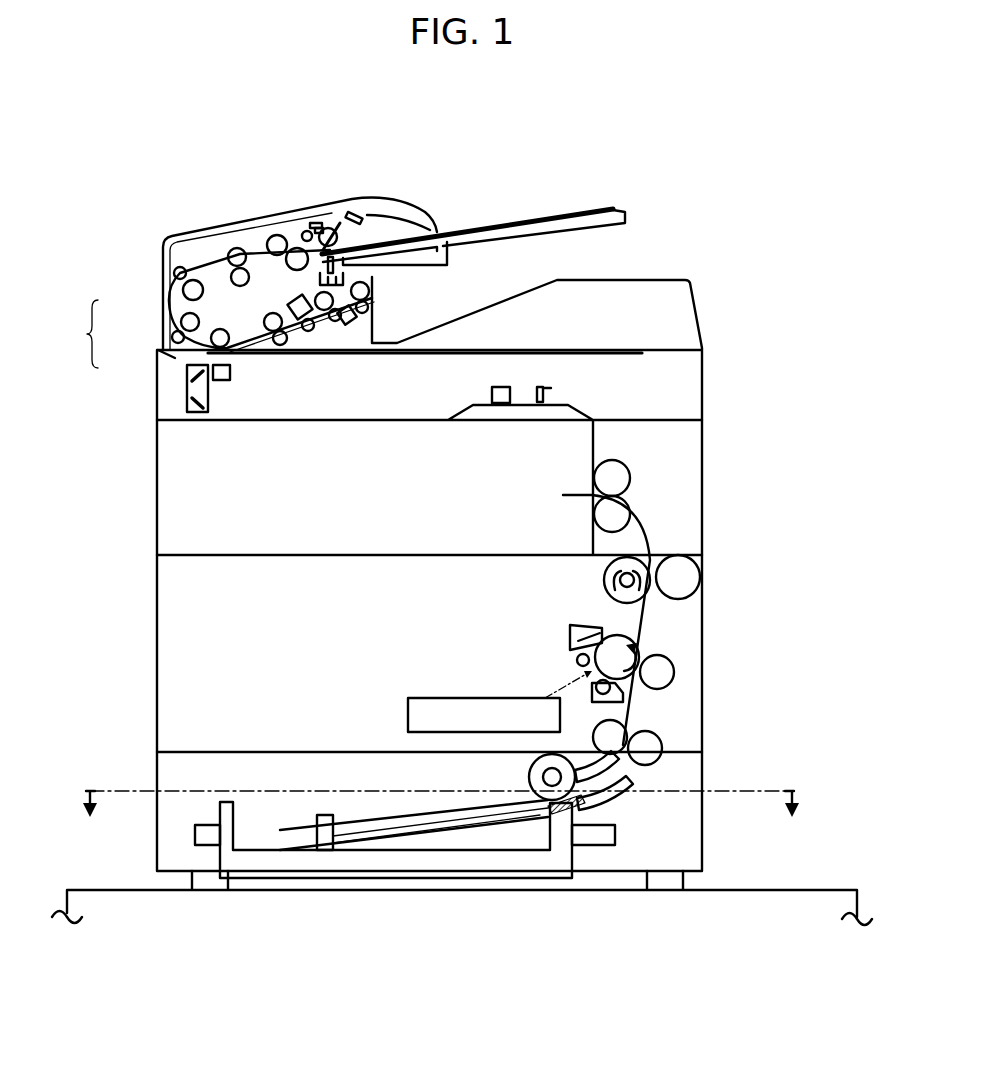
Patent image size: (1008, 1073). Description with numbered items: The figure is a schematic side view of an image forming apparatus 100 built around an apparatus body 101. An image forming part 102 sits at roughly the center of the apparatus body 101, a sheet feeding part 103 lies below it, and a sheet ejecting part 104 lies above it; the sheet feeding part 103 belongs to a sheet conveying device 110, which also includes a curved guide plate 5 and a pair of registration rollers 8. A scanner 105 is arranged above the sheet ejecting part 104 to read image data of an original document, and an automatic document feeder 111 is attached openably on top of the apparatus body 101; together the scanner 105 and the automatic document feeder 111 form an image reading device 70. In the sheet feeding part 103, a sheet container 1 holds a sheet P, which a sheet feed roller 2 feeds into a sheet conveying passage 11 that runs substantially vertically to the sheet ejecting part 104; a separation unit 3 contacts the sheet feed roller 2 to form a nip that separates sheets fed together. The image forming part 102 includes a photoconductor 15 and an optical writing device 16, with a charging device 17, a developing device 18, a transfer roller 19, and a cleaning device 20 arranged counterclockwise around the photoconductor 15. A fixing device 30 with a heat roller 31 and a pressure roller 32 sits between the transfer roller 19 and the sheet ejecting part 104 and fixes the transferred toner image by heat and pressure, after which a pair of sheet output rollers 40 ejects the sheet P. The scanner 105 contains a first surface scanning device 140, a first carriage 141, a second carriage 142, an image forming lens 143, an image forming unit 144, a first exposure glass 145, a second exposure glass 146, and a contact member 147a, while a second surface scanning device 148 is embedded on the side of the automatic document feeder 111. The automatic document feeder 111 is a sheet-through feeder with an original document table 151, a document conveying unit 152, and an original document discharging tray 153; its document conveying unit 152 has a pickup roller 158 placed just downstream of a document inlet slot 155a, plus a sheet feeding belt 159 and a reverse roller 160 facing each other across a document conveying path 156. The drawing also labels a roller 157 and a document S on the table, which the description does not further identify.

The image forming apparatus 100 is at (692, 168).
The apparatus body 101 is at (703, 463).
The image forming part 102 is at (543, 624).
The sheet feeding part 103 is at (482, 773).
The sheet ejecting part 104 is at (638, 487).
The scanner 105 is at (157, 377).
The sheet conveying device 110 is at (692, 834).
The automatic document feeder 111 is at (157, 324).
The first surface scanning device 140 is at (170, 405).
The first carriage 141 is at (232, 378).
The second carriage 142 is at (208, 388).
The image forming lens 143 is at (492, 394).
The image forming unit 144 is at (544, 387).
The first exposure glass 145 is at (230, 340).
The second exposure glass 146 is at (553, 349).
The contact member 147a is at (243, 352).
The second surface scanning device 148 is at (298, 302).
The original document table 151 is at (624, 203).
The document conveying unit 152 is at (190, 242).
The original document discharging tray 153 is at (498, 299).
The document inlet slot 155a is at (362, 210).
The document conveying path 156 is at (263, 256).
The separation roller 157 is at (334, 230).
The pickup roller 158 is at (320, 222).
The sheet feeding belt 159 is at (284, 236).
The reverse roller 160 is at (302, 263).
The image reading device 70 is at (251, 287).
The pair of sheet output rollers 40 is at (632, 462).
The fixing device 30 is at (673, 540).
The heat roller 31 is at (604, 575).
The pressure roller 32 is at (675, 601).
The photoconductor 15 is at (622, 634).
The optical writing device 16 is at (450, 698).
The charging device 17 is at (577, 661).
The developing device 18 is at (587, 693).
The transfer roller 19 is at (673, 660).
The cleaning device 20 is at (571, 624).
The pair of registration rollers 8 is at (662, 729).
The sheet conveying passage 11 is at (623, 766).
The curved guide plate 5 is at (628, 797).
The sheet container 1 is at (218, 823).
The sheet feed roller 2 is at (529, 774).
The separation unit 3 is at (558, 814).
The sheet P is at (403, 838).
The document S is at (519, 222).